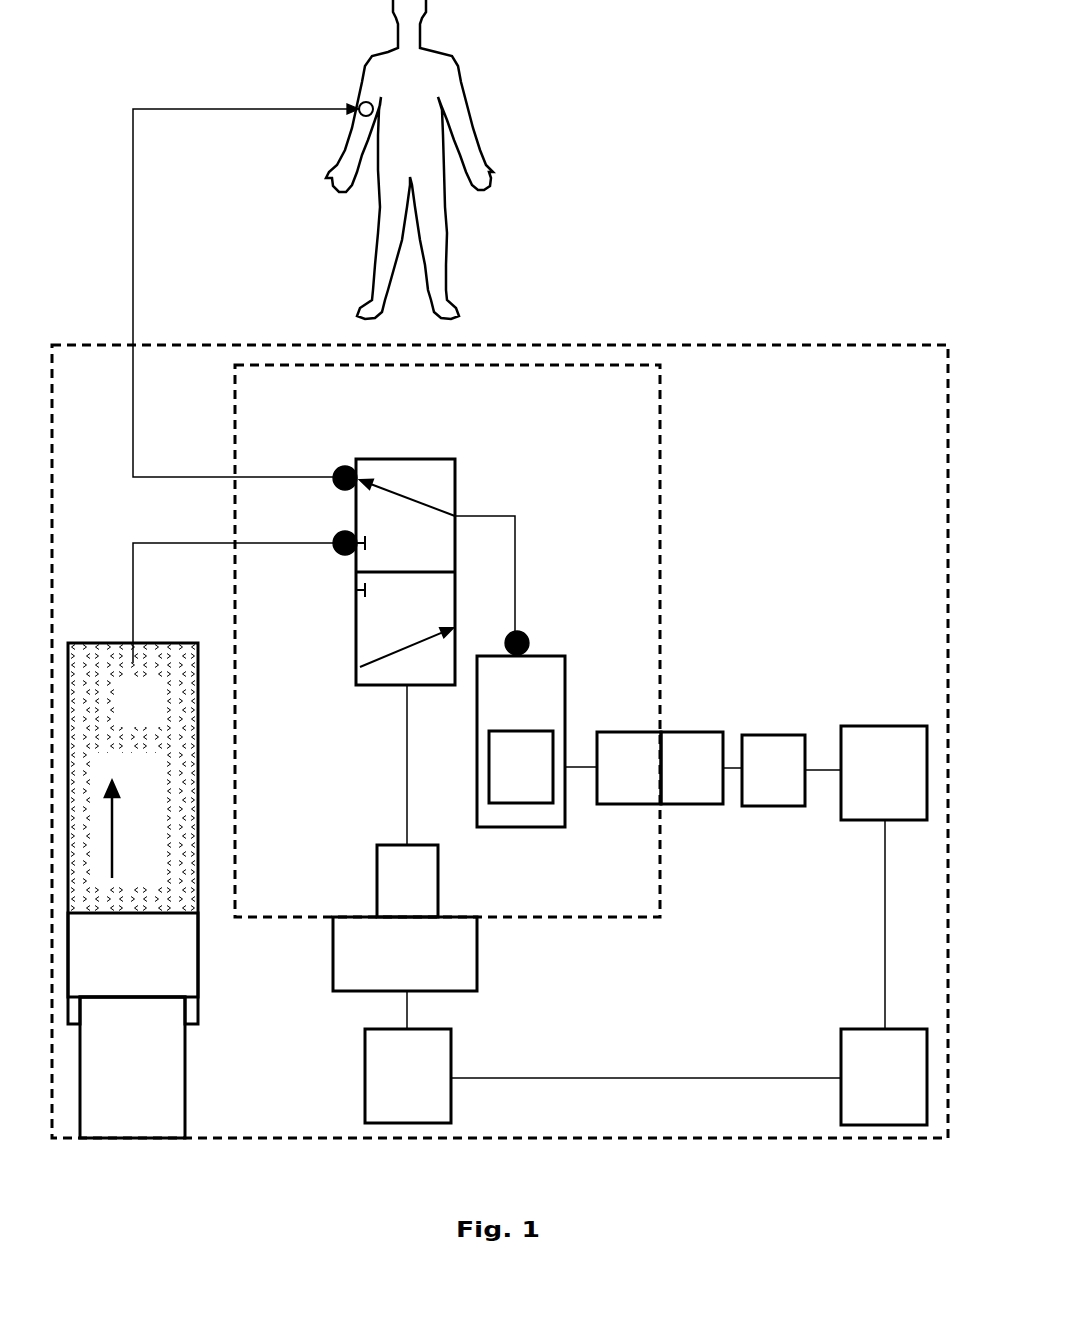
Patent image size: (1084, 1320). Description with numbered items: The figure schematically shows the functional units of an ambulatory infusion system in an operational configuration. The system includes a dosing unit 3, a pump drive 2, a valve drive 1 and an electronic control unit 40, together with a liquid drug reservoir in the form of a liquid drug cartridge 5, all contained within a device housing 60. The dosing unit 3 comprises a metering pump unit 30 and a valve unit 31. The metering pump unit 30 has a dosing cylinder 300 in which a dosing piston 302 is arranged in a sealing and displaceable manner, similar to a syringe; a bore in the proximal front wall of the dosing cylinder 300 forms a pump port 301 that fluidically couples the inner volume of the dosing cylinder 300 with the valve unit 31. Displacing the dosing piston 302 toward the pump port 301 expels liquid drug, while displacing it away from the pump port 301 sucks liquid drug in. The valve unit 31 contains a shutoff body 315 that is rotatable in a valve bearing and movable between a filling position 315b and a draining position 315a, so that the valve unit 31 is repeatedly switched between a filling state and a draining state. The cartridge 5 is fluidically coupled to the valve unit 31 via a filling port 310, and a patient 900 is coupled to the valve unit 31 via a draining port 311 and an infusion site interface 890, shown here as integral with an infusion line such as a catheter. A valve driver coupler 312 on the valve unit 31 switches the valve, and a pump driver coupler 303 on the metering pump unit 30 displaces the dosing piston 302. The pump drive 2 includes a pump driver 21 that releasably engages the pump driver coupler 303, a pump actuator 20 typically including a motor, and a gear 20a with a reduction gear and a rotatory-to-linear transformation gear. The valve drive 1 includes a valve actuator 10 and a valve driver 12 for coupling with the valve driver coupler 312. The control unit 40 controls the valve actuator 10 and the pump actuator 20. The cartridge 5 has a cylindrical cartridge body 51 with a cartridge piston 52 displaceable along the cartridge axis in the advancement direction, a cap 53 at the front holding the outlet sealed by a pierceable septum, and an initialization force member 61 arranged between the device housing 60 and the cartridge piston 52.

The valve drive 1 is at (497, 1020).
The pump drive 2 is at (735, 677).
The dosing unit 3 is at (606, 415).
The liquid drug cartridge 5 is at (131, 720).
The valve actuator 10 is at (394, 1090).
The valve driver 12 is at (391, 967).
The pump actuator 20 is at (870, 786).
The gear 20a is at (752, 783).
The pump driver 21 is at (678, 781).
The metering pump unit 30 is at (580, 698).
The dosing cylinder 300 is at (500, 711).
The pump port 301 is at (528, 633).
The dosing piston 302 is at (499, 779).
The pump driver coupler 303 is at (606, 781).
The valve unit 31 is at (500, 470).
The filling port 310 is at (337, 562).
The draining port 311 is at (334, 462).
The valve driver coupler 312 is at (386, 894).
The shutoff body 315 is at (455, 476).
The draining position 315a is at (437, 476).
The filling position 315b is at (393, 678).
The electronic control unit 40 is at (870, 1090).
The cartridge body 51 is at (87, 638).
The cartridge piston 52 is at (182, 976).
The cap 53 is at (129, 637).
The device housing 60 is at (762, 335).
The initialization force member 61 is at (162, 1026).
The infusion site interface 890 is at (246, 275).
The patient 900 is at (433, 80).